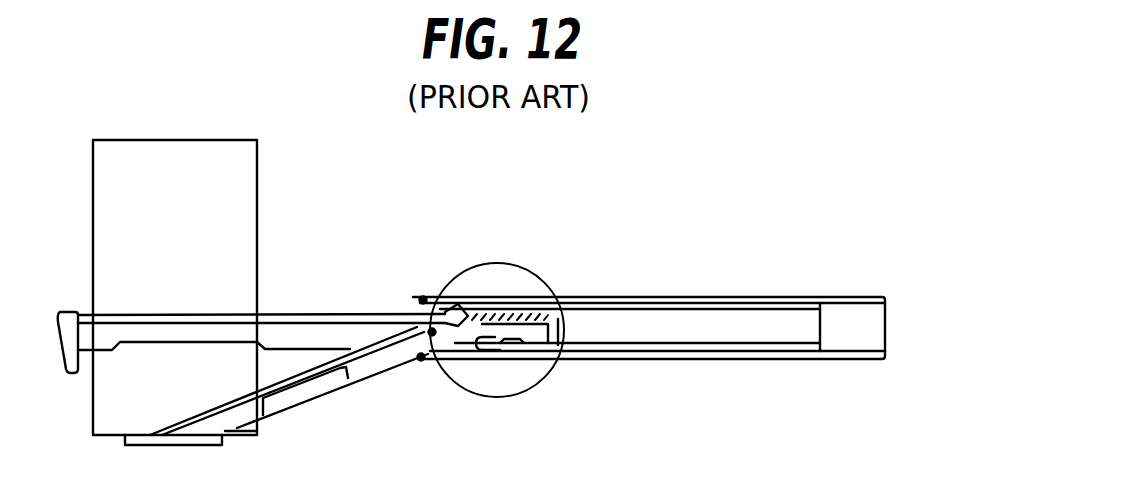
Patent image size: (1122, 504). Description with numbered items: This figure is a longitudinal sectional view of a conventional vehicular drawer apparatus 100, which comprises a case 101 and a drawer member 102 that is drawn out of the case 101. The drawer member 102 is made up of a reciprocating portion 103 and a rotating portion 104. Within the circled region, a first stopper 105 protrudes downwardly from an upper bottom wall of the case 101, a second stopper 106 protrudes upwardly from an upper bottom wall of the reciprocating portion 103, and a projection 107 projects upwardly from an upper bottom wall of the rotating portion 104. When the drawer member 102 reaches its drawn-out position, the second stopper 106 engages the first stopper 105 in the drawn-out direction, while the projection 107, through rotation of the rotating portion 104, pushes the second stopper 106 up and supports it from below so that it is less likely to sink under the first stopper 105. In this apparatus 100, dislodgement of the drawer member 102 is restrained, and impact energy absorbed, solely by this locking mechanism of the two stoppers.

The vehicular drawer apparatus 100 is at (748, 252).
The case 101 is at (592, 296).
The drawer member 102 is at (383, 294).
The reciprocating portion 103 is at (332, 313).
The rotating portion 104 is at (310, 378).
The first stopper 105 is at (455, 302).
The second stopper 106 is at (473, 317).
The projection 107 is at (462, 342).